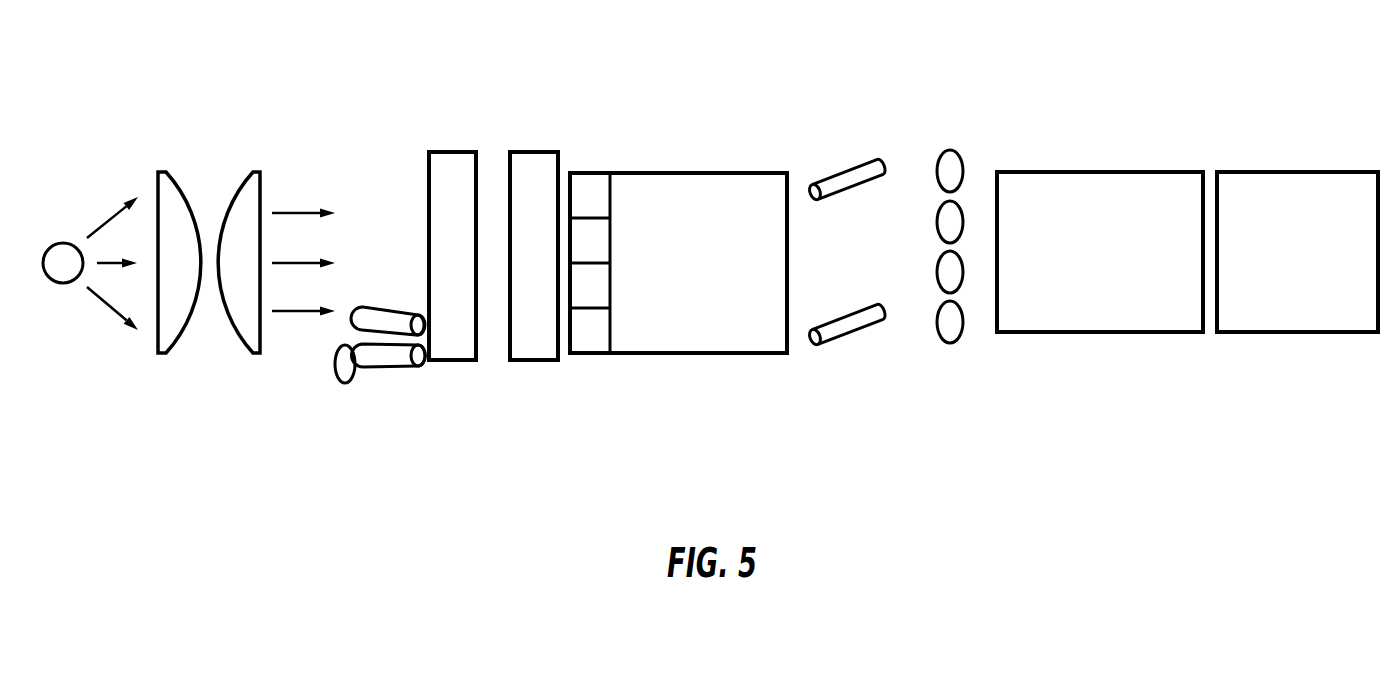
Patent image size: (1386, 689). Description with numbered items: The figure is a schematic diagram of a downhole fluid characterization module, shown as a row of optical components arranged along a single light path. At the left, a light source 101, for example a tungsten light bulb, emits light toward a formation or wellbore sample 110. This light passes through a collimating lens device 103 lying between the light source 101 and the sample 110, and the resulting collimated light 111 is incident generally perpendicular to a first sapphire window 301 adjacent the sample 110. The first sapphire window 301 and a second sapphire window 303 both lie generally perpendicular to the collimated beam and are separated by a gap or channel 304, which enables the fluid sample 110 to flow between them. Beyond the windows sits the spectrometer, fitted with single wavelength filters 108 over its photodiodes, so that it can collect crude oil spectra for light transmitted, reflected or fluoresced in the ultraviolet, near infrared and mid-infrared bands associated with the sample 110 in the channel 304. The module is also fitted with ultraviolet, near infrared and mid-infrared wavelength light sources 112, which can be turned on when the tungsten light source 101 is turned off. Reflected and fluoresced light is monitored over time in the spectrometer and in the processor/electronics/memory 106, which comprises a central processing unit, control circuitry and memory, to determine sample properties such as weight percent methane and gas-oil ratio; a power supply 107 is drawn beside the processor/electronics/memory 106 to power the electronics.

The light source 101 is at (63, 283).
The collimating lens device 103 is at (210, 338).
The collimated light 111 is at (292, 325).
The first sapphire window 301 is at (450, 160).
The gap or channel 304 is at (492, 162).
The sapphire window 303 is at (537, 160).
The sample 110 is at (494, 347).
The single wavelength filters 108 is at (593, 185).
The processor/electronics/memory 106 is at (725, 337).
The UV/NIR/MIR wavelength light sources 112 is at (852, 342).
The power supply 107 is at (1297, 170).